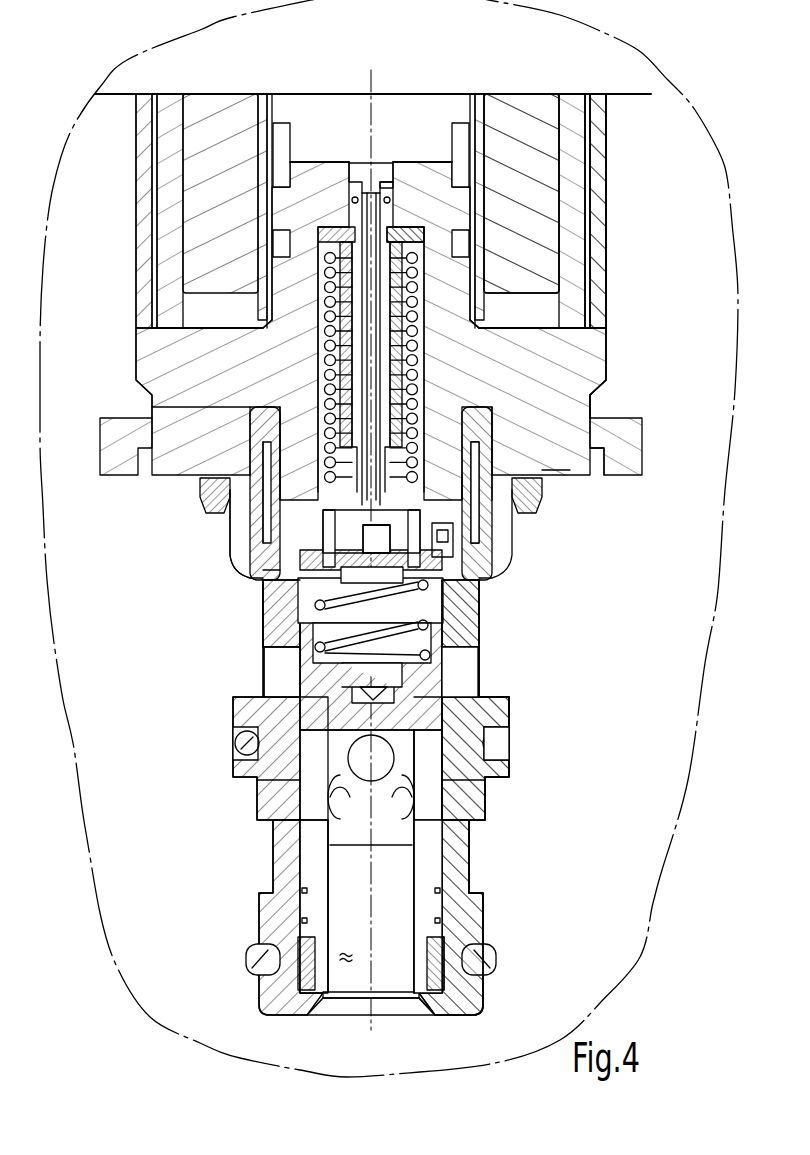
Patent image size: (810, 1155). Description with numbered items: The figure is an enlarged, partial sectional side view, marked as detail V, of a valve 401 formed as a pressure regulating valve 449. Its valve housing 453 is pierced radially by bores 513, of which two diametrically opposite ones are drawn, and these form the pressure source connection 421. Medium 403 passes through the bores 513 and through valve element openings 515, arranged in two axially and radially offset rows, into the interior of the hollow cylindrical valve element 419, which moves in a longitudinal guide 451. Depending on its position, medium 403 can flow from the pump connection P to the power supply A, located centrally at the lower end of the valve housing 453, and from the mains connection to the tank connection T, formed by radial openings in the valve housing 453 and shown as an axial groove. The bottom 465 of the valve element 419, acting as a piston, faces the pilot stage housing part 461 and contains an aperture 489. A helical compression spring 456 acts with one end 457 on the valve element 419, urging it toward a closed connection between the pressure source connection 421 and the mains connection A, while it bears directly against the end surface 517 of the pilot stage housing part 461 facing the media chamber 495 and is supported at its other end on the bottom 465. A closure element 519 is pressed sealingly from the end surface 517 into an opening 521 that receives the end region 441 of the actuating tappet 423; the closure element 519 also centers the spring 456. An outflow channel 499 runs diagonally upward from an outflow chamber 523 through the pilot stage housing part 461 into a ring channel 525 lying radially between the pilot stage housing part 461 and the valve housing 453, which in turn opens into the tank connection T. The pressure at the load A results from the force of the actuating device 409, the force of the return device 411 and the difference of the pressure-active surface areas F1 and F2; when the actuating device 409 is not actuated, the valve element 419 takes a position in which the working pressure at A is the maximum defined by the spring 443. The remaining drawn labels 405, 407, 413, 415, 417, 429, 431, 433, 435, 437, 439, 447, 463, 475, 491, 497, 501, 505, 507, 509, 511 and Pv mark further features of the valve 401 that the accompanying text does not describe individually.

The valve 401 is at (98, 80).
The medium 403 is at (347, 965).
The valve housing 405 is at (465, 773).
The housing body 407 is at (495, 498).
The actuating device 409 is at (170, 218).
The return device 411 is at (410, 270).
The mounting flange 413 is at (592, 436).
The housing wall 415 is at (518, 520).
The valve body 417 is at (515, 552).
The valve element 419 is at (580, 374).
The pressure source connection 421 is at (278, 802).
The actuating tappet 423 is at (395, 205).
The spring end 429 is at (440, 628).
The housing lip 431 is at (595, 402).
The pole core 433 is at (330, 490).
The armature cap 435 is at (400, 185).
The armature 437 is at (355, 192).
The valve seat 439 is at (330, 540).
The end region 441 is at (270, 594).
The spring 443 is at (560, 306).
The housing section 447 is at (552, 478).
The pressure regulating valve 449 is at (605, 118).
The longitudinal guide 451 is at (303, 880).
The valve housing 453 is at (478, 918).
The helical compression spring 456 is at (265, 613).
The end of helical compression spring 457 is at (482, 597).
The pilot stage housing part 461 is at (330, 530).
The compression spring 463 is at (422, 652).
The bottom of valve element 465 is at (323, 690).
The pin 475 is at (378, 78).
The aperture 489 is at (333, 727).
The flange recess 491 is at (500, 470).
The media chamber 495 is at (430, 695).
The pressure chamber slot 497 is at (478, 467).
The outflow channel 499 is at (258, 445).
The yoke 501 is at (560, 347).
The yoke 505 is at (300, 302).
The yoke plate 507 is at (250, 392).
The guide plate 509 is at (480, 583).
The cover flange 511 is at (267, 557).
The bores 513 is at (462, 830).
The valve element openings 515 is at (340, 800).
The end surface 517 is at (260, 572).
The closure element 519 is at (425, 640).
The opening 521 is at (498, 527).
The outflow chamber 523 is at (213, 492).
The ring channel 525 is at (262, 422).
The pump connection P is at (475, 810).
The tank connection T is at (273, 666).
The power supply connection A is at (405, 963).
The pressure-active surface area F1 is at (422, 432).
The pressure-active surface area F2 is at (378, 160).
The pilot pressure Pv is at (530, 468).
The detail V is at (734, 8).